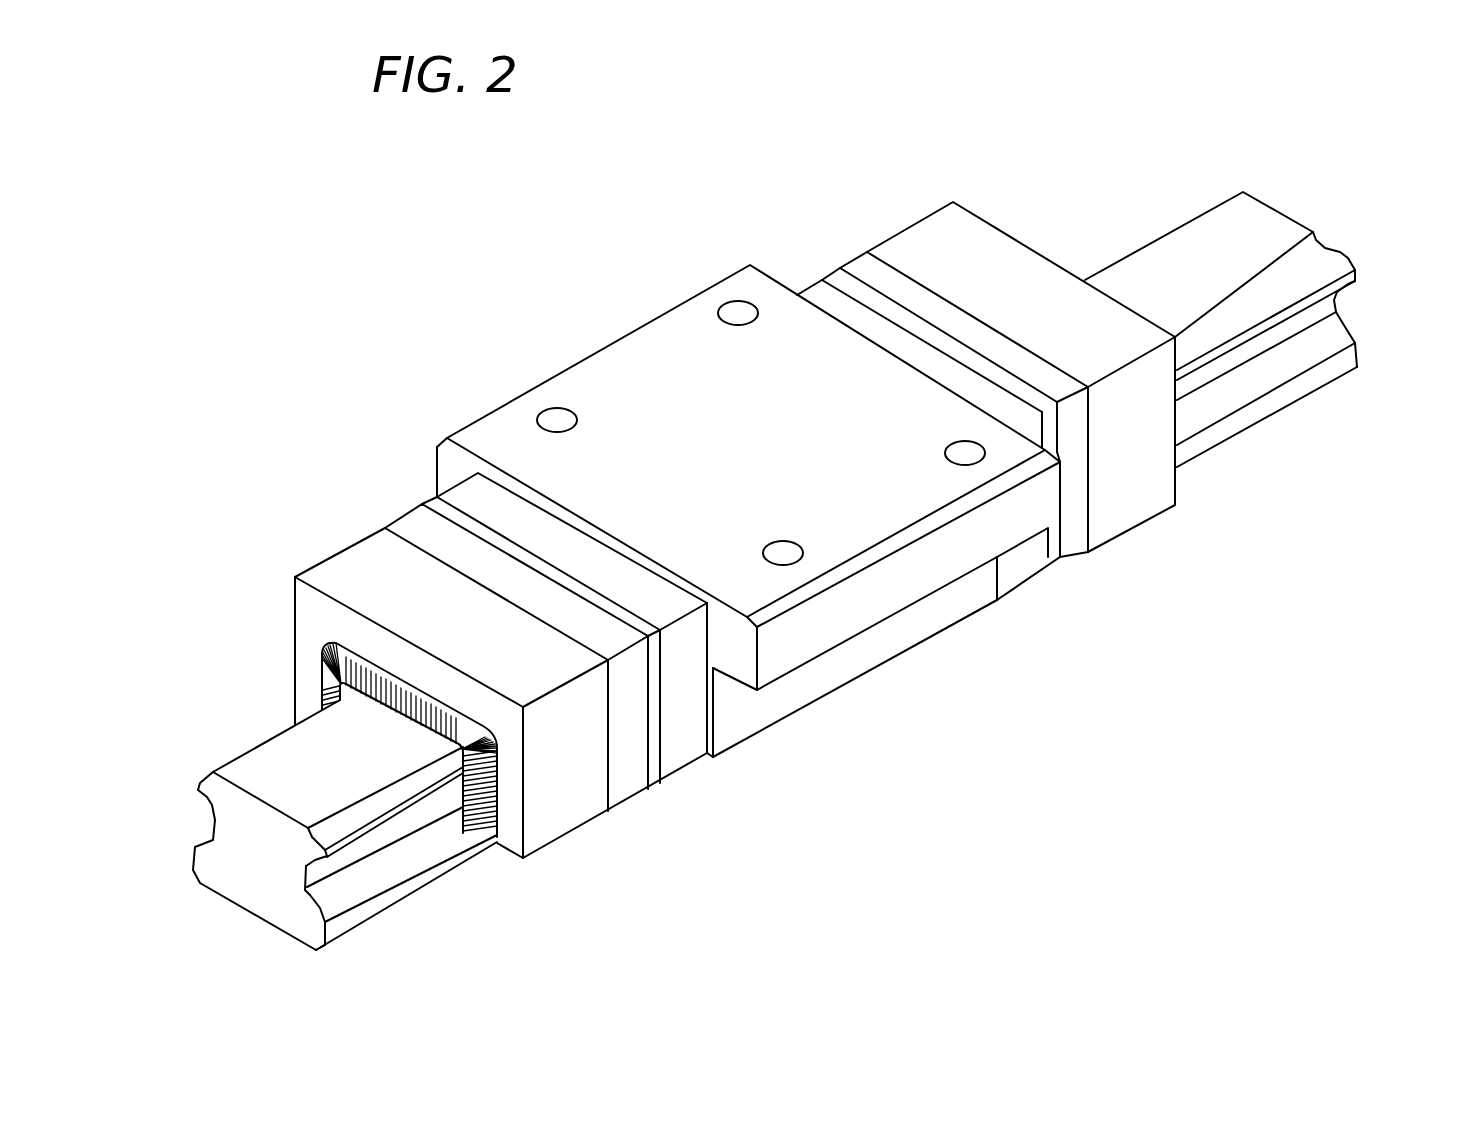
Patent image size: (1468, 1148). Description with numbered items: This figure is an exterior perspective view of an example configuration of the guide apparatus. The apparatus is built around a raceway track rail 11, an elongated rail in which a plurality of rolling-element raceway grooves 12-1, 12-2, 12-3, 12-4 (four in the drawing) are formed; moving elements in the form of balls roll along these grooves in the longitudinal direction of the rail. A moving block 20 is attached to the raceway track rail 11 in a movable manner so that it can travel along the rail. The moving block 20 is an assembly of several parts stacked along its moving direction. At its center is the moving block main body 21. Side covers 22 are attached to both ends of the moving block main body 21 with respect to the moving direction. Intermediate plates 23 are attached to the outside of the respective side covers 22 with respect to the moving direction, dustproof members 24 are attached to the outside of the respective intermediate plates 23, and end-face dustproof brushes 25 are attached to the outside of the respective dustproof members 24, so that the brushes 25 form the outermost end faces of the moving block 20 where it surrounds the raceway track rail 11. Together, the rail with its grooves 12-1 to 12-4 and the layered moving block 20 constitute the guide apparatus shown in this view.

The raceway track rail 11 is at (770, 554).
The rolling-element raceway groove 12-1 is at (1303, 278).
The rolling-element raceway groove 12-2 is at (1307, 303).
The rolling-element raceway groove 12-3 is at (198, 790).
The rolling-element raceway groove 12-4 is at (207, 800).
The moving block 20 is at (709, 482).
The moving block main body 21 is at (595, 375).
The side cover 22 is at (468, 490).
The intermediate plate 23 is at (433, 497).
The dustproof member 24 is at (413, 520).
The end-face dustproof brush 25 is at (342, 560).